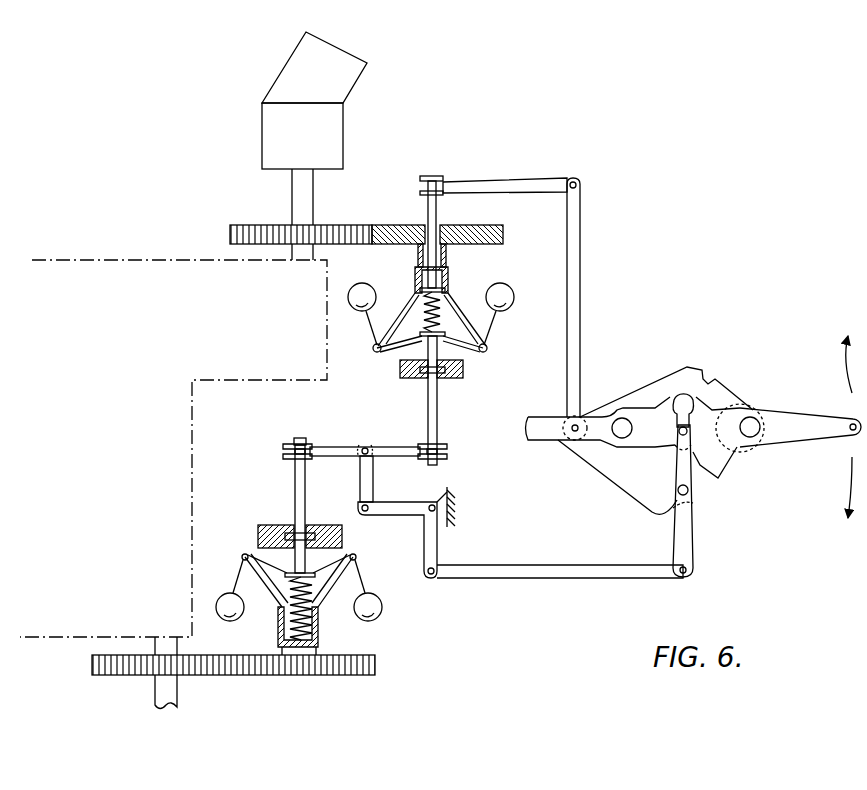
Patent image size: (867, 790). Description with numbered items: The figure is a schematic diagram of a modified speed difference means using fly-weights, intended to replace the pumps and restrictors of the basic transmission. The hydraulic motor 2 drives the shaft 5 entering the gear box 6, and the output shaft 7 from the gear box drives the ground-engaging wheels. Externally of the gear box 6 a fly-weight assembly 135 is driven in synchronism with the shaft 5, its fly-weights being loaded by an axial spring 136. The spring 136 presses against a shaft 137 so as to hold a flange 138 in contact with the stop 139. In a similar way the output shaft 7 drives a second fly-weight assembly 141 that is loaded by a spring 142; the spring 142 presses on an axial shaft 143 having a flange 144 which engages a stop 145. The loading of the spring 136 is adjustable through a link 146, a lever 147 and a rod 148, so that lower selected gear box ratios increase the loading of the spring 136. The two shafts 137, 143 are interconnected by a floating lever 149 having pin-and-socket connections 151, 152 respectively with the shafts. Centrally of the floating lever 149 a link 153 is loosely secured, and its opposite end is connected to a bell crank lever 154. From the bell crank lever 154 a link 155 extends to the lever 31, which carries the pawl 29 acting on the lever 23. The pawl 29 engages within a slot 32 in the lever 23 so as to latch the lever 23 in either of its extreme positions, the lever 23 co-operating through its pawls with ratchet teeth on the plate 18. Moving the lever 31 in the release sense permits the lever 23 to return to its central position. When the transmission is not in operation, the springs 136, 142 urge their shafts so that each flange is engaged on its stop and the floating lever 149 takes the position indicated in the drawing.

The hydraulic motor 2 is at (348, 77).
The shaft 5 is at (300, 193).
The gear box 6 is at (180, 273).
The output shaft 7 is at (170, 687).
The plate 18 is at (636, 398).
The lever 23 is at (785, 420).
The pawl 29 is at (685, 405).
The bell crank lever 31 is at (690, 537).
The slot 32 is at (678, 400).
The fly-weight assembly 135 is at (502, 327).
The axial spring 136 is at (440, 312).
The shaft 137 is at (437, 392).
The flange 138 is at (462, 369).
The stop 139 is at (400, 371).
The fly-weight assembly 141 is at (372, 581).
The spring 142 is at (317, 622).
The axial shaft 143 is at (297, 490).
The flange 144 is at (277, 537).
The stop 145 is at (325, 521).
The link 146 is at (575, 222).
The lever 147 is at (531, 185).
The rod 148 is at (428, 213).
The floating lever 149 is at (387, 445).
The pin-and-socket connection 151 is at (447, 451).
The pin-and-socket connection 152 is at (283, 451).
The link 153 is at (373, 473).
The bell crank lever 154 is at (437, 547).
The link 155 is at (513, 572).